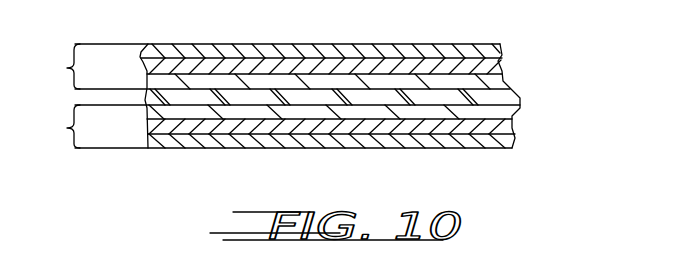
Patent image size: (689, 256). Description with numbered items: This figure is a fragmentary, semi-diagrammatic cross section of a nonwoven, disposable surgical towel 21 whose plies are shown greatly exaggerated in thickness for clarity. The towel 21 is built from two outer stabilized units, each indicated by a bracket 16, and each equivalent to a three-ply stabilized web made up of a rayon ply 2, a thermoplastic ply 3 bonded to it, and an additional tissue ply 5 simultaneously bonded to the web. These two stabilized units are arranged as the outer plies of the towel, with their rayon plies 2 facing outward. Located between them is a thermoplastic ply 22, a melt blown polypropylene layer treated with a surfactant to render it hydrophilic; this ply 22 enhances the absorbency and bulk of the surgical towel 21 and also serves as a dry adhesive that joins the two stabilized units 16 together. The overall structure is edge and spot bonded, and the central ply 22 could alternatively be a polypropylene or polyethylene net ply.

The surgical towel 21 is at (348, 43).
The rayon ply 2 is at (500, 46).
The thermoplastic ply 3 is at (500, 67).
The tissue ply 5 is at (503, 82).
The thermoplastic ply 22 is at (518, 99).
The sub-laminate 16 is at (59, 96).